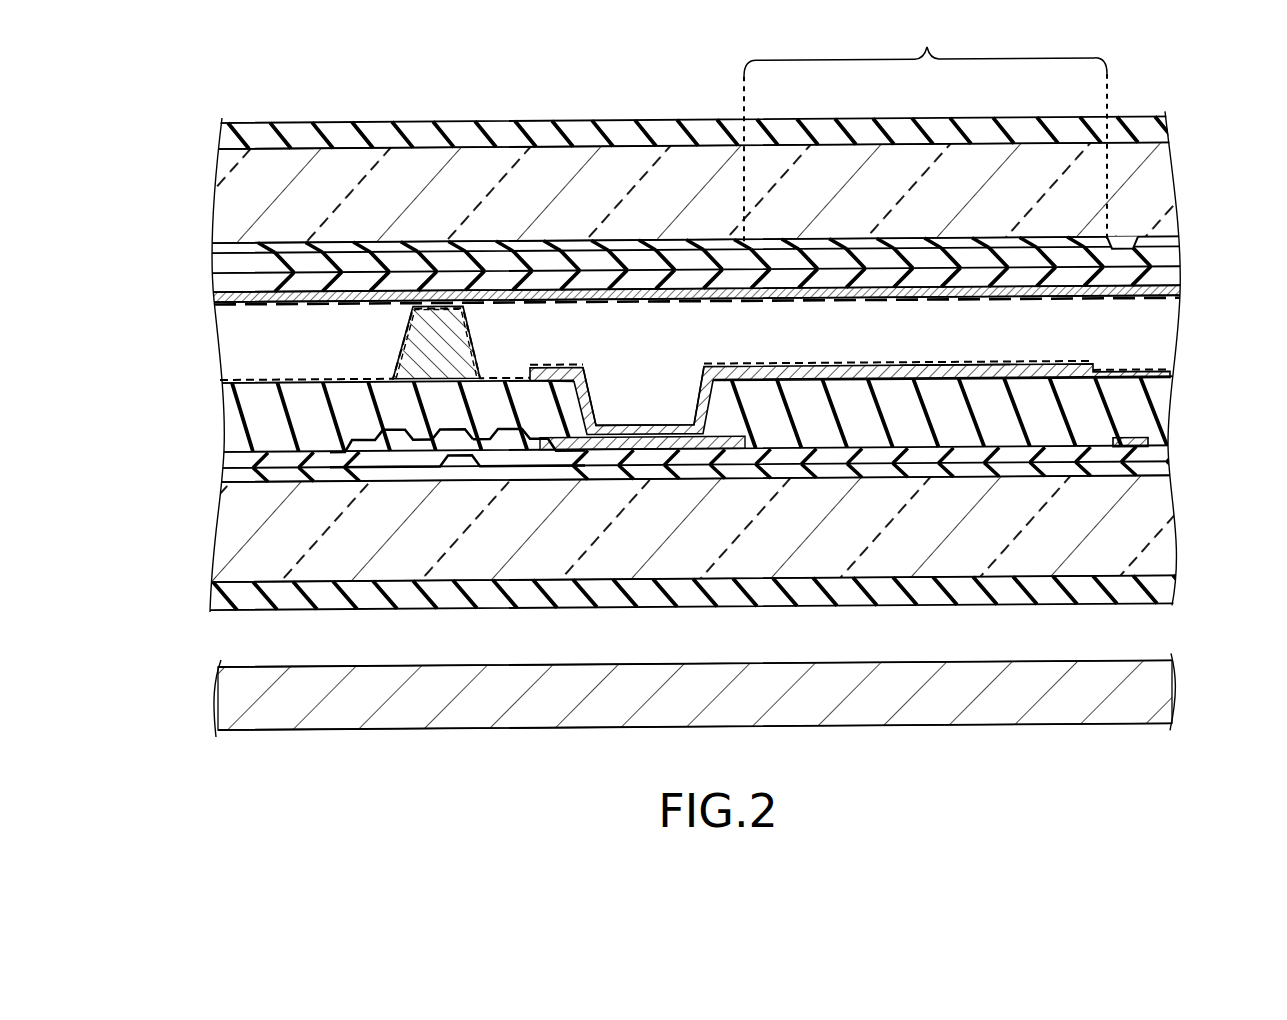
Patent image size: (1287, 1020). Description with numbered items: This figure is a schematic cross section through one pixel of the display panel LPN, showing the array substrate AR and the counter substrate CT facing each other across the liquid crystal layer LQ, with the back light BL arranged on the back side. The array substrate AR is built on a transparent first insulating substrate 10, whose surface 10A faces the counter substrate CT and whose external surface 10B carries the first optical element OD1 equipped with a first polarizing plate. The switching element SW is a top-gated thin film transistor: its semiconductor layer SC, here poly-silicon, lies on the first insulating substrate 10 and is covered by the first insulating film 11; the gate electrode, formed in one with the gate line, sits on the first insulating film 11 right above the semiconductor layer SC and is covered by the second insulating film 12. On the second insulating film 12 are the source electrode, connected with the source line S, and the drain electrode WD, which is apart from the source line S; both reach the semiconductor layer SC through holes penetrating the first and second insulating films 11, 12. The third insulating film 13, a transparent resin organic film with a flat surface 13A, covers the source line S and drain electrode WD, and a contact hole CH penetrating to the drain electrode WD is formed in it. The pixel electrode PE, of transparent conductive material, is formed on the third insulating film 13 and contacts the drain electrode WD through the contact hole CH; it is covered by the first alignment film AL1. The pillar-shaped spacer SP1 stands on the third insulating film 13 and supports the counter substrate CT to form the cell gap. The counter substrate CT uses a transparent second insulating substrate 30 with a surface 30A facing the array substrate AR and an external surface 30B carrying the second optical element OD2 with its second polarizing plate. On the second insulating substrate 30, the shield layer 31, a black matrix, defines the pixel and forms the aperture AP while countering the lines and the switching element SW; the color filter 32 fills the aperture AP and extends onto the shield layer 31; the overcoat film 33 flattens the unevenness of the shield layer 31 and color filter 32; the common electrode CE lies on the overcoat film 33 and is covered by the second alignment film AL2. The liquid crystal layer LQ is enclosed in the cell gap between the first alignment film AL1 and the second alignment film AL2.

The second optical element OD2 is at (1168, 135).
The second insulating substrate 30 is at (237, 191).
The shield layer 31 is at (250, 246).
The color filter 32 is at (224, 262).
The overcoat film 33 is at (226, 288).
The second alignment film AL2 is at (238, 305).
The common electrode CE is at (1123, 308).
The liquid crystal layer LQ is at (238, 341).
The first alignment film AL1 is at (240, 378).
The third insulating film 13 is at (240, 425).
The second insulating film 12 is at (228, 456).
The first insulating film 11 is at (228, 476).
The first insulating substrate 10 is at (237, 565).
The first optical element OD1 is at (1167, 597).
The back light BL is at (1172, 715).
The pillar-shaped spacer SP1 is at (458, 347).
The pixel electrode PE is at (706, 372).
The contact hole CH is at (598, 423).
The first flat surface 13A is at (955, 370).
The source line S is at (1138, 448).
The switching element SW is at (406, 496).
The semiconductor layer SC is at (458, 452).
The drain electrode WD is at (556, 445).
The inner surface of second substrate 30A is at (1168, 252).
The external surface 30B is at (1104, 128).
The inner surface of first substrate 10A is at (1142, 463).
The external surface 10B is at (1128, 596).
The liquid crystal display panel LPN is at (1188, 179).
The counter substrate CT is at (1165, 219).
The array substrate AR is at (1196, 525).
The aperture AP is at (925, 133).